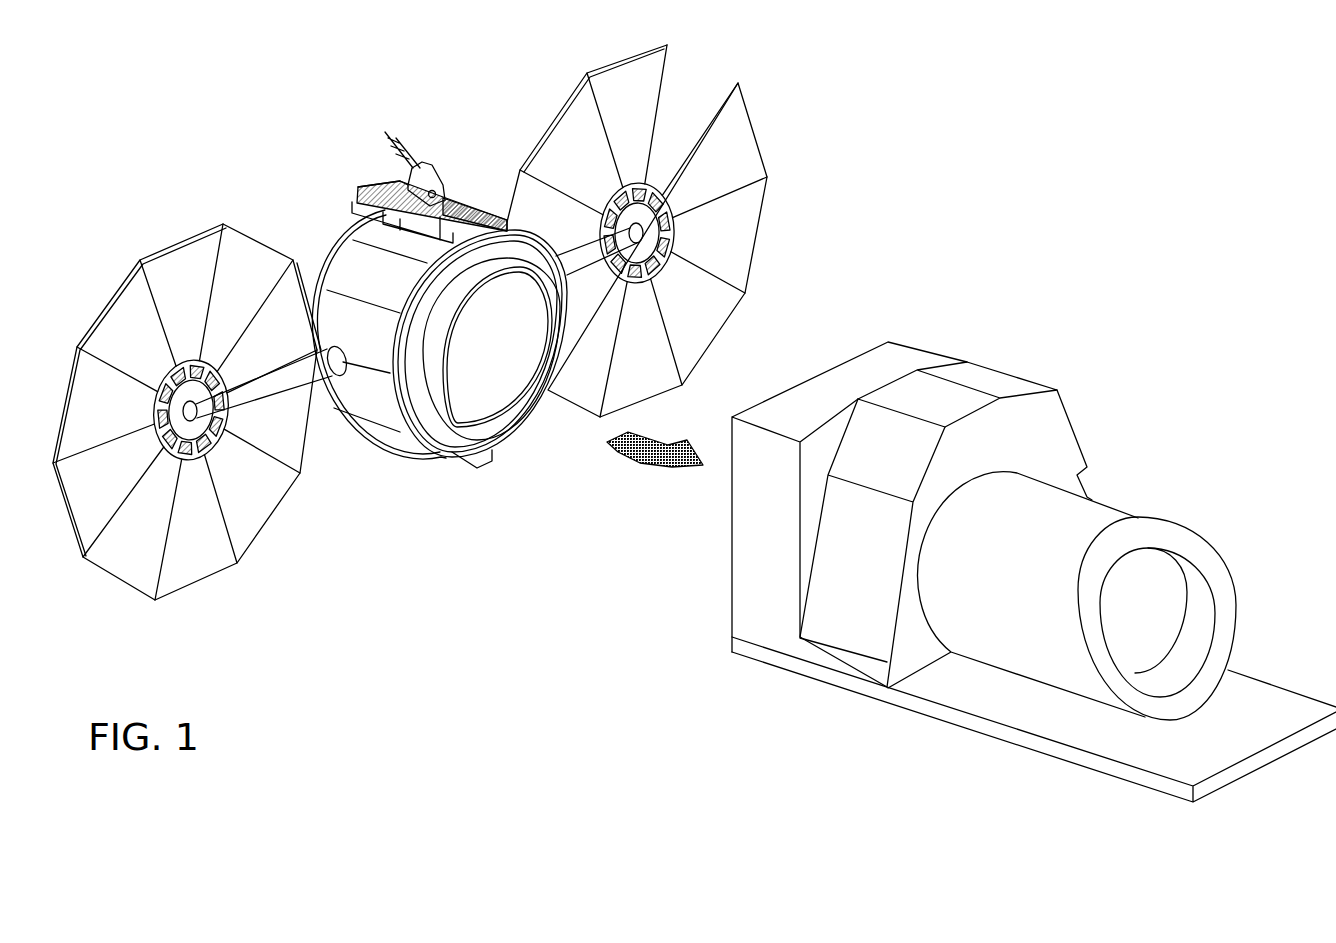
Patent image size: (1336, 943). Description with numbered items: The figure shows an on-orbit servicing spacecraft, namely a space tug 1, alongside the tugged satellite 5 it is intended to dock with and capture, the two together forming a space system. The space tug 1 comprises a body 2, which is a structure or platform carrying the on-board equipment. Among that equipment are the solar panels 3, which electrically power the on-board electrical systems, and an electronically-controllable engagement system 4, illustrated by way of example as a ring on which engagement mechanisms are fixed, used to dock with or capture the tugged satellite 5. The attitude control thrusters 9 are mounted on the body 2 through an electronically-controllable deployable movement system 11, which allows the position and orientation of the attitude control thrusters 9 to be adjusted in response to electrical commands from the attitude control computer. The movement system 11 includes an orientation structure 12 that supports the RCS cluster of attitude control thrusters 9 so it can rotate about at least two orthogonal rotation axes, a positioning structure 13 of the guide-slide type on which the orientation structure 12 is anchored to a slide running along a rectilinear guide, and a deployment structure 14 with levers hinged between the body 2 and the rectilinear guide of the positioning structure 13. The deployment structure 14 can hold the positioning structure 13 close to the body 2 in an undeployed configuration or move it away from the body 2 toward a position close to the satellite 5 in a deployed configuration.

The space tug 1 is at (338, 243).
The body 2 is at (389, 444).
The solar panels 3 is at (108, 297).
The engagement system 4 is at (452, 436).
The tugged satellite 5 is at (1022, 378).
The attitude control thrusters 9 is at (442, 170).
The deployable movement system 11 is at (469, 193).
The orientation structure 12 is at (449, 173).
The positioning structure 13 is at (363, 182).
The deployment structure 14 is at (348, 215).